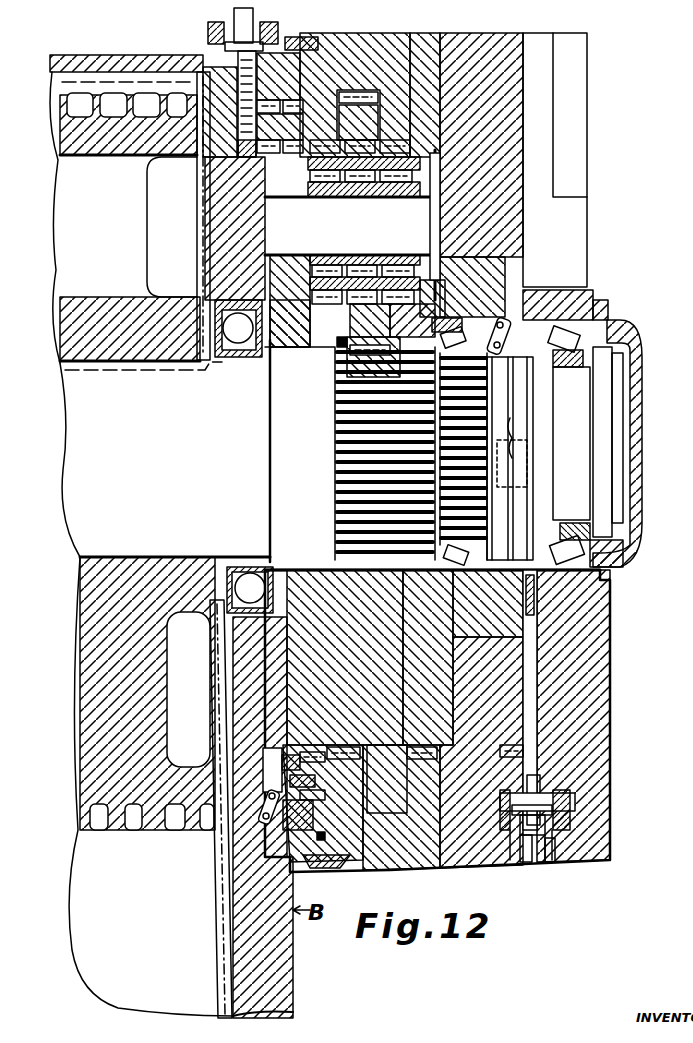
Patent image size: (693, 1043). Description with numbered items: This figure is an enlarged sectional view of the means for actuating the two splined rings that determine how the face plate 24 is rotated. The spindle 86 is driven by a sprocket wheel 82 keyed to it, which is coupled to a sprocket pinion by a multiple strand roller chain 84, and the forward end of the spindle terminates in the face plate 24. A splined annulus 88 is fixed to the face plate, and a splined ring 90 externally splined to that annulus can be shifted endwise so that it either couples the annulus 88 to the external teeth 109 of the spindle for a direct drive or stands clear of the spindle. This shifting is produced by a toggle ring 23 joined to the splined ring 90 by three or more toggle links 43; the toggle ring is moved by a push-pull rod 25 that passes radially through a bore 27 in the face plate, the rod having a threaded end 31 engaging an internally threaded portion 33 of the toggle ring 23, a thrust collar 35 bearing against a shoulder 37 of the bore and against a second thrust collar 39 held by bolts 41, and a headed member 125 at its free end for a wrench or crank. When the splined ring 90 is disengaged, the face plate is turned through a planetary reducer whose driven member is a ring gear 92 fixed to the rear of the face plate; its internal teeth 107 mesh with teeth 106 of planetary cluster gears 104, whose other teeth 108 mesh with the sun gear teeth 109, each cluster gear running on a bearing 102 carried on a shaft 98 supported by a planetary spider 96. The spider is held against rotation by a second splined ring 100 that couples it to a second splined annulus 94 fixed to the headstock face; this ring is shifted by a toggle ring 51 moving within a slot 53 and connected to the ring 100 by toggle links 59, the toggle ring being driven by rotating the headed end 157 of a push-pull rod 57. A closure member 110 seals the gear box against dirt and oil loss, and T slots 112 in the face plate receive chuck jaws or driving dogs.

The headed end 157 is at (233, 25).
The push-pull rod 57 is at (207, 43).
The second splined annulus 94 is at (285, 44).
The splined ring 100 is at (345, 58).
The ring gear 92 is at (372, 60).
The internal teeth 107 is at (426, 55).
The T slots 112 is at (568, 103).
The toggle ring 51 is at (207, 168).
The planetary spider 96 is at (294, 178).
The shafts 98 is at (290, 232).
The bearing 102 is at (390, 255).
The splined annulus 88 is at (507, 248).
The toggle ring 23 is at (527, 278).
The toggle links 43 is at (497, 357).
The splined ring 90 is at (497, 440).
The planetary cluster gear 104 is at (283, 403).
The gear teeth 106 is at (320, 346).
The gear teeth 108 is at (345, 362).
The external teeth 109 is at (340, 462).
The spindle 86 is at (82, 473).
The closure member 110 is at (638, 505).
The internally threaded portion 33 is at (625, 549).
The threaded end 31 is at (612, 598).
The radial bore 27 is at (538, 665).
The face plate 24 is at (597, 724).
The push-pull rod 25 is at (527, 749).
The shoulder 37 is at (541, 793).
The bolts 41 is at (570, 833).
The thrust collar 39 is at (553, 855).
The thrust collar 35 is at (538, 862).
The headed member 125 is at (550, 862).
The slot 53 is at (263, 752).
The toggle links 59 is at (262, 806).
The sprocket wheel 82 is at (145, 828).
The roller chain 84 is at (213, 980).